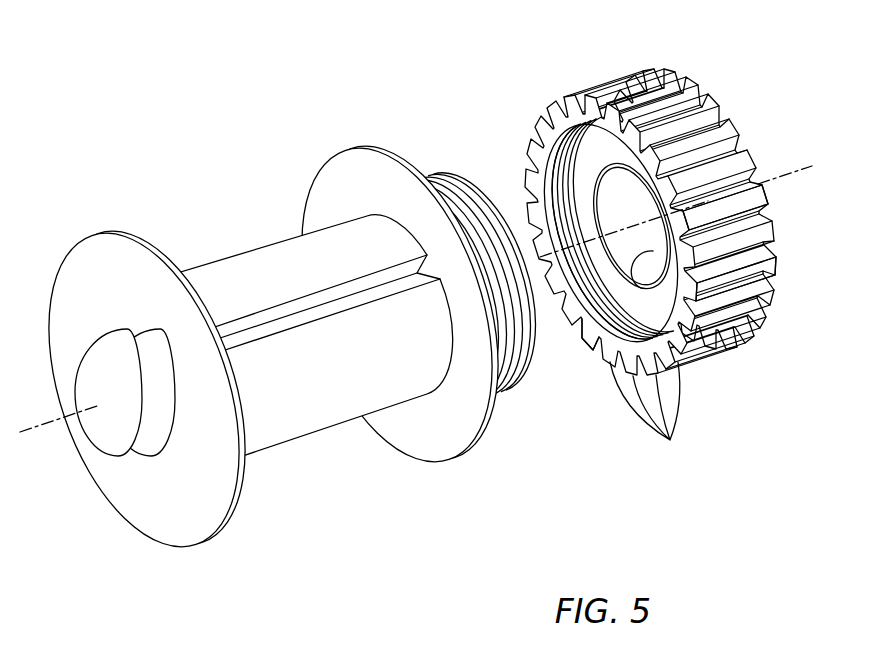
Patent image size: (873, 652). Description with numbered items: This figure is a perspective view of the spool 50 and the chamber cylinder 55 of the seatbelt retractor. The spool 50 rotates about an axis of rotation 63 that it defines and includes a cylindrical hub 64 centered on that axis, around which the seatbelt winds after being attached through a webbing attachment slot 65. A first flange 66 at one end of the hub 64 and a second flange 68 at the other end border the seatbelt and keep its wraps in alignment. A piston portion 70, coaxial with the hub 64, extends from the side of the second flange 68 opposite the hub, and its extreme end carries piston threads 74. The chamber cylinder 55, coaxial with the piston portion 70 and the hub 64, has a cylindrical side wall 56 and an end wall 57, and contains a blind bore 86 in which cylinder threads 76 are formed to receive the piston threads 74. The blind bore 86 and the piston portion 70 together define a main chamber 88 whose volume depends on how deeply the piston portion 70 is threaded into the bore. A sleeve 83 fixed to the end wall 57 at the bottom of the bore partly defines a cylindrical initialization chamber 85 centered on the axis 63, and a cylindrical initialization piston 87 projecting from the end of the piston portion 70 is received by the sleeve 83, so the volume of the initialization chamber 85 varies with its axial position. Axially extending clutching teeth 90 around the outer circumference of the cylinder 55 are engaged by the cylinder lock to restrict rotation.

The spool 50 is at (283, 340).
The chamber cylinder 55 is at (650, 250).
The cylindrical side wall 56 is at (753, 210).
The end wall 57 is at (622, 157).
The axis of rotation 63 is at (797, 173).
The hub 64 is at (283, 355).
The webbing attachment slot 65 is at (280, 333).
The first flange 66 is at (64, 258).
The second flange 68 is at (444, 462).
The piston portion 70 is at (476, 277).
The piston threads 74 is at (500, 395).
The cylinder threads 76 is at (606, 322).
The sleeve 83 is at (767, 289).
The initialization chamber 85 is at (682, 314).
The blind bore 86 is at (554, 110).
The initialization piston 87 is at (522, 230).
The main chamber 88 is at (584, 167).
The clutching teeth 90 is at (646, 417).